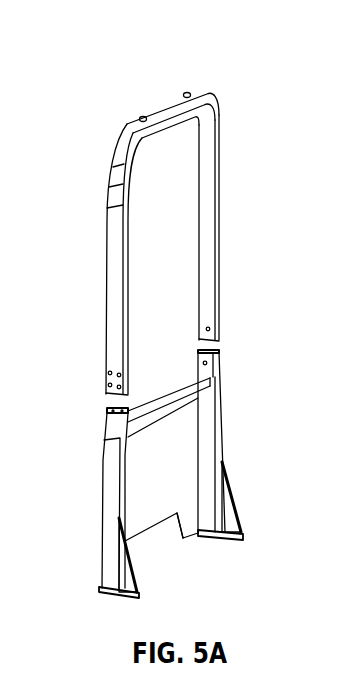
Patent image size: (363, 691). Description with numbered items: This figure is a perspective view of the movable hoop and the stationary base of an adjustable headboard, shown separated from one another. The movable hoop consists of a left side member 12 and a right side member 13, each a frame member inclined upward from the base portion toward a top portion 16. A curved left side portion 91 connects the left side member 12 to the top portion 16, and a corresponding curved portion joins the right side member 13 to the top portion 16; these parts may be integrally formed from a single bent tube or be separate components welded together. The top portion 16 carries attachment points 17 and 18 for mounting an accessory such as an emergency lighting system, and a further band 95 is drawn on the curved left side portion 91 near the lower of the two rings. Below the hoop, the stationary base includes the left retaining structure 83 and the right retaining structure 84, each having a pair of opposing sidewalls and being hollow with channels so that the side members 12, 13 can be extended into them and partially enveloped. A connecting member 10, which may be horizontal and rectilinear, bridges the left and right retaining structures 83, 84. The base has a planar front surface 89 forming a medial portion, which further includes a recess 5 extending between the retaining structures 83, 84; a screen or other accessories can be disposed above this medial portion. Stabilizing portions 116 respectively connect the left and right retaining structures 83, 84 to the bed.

The recess 5 is at (163, 523).
The connecting member 10 is at (219, 398).
The left side member 12 is at (107, 272).
The right side member 13 is at (220, 186).
The top portion 16 is at (128, 118).
The attachment point 17 is at (144, 116).
The attachment point 18 is at (188, 92).
The left retaining structure 83 is at (102, 545).
The right retaining structure 84 is at (222, 438).
The planar front surface 89 is at (162, 487).
The curved left side portion 91 is at (107, 196).
The ring 95 is at (107, 172).
The stabilizing portion 116 is at (137, 586).